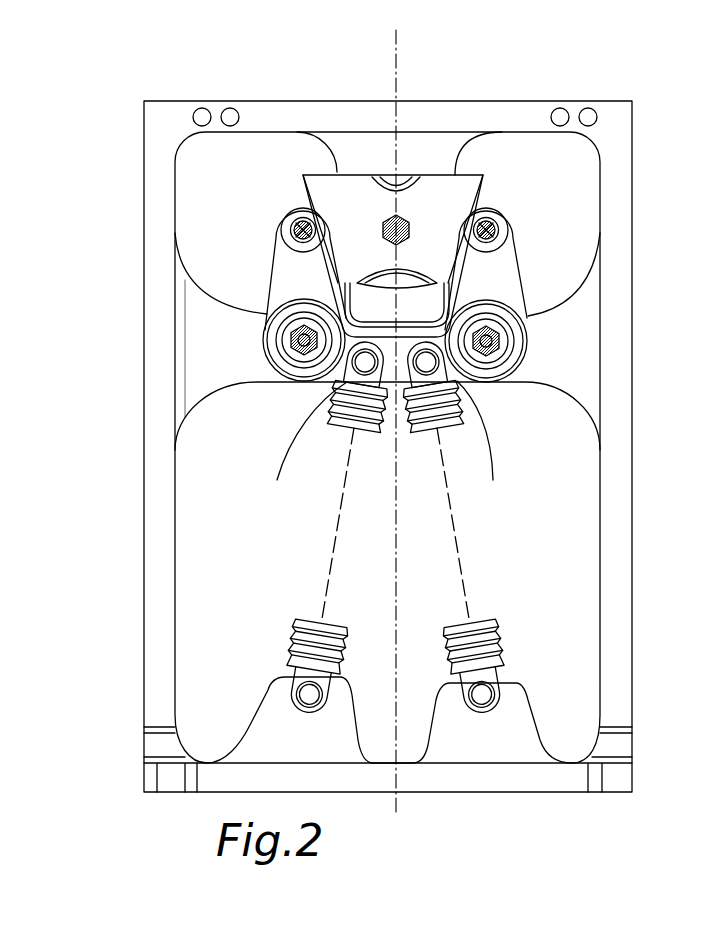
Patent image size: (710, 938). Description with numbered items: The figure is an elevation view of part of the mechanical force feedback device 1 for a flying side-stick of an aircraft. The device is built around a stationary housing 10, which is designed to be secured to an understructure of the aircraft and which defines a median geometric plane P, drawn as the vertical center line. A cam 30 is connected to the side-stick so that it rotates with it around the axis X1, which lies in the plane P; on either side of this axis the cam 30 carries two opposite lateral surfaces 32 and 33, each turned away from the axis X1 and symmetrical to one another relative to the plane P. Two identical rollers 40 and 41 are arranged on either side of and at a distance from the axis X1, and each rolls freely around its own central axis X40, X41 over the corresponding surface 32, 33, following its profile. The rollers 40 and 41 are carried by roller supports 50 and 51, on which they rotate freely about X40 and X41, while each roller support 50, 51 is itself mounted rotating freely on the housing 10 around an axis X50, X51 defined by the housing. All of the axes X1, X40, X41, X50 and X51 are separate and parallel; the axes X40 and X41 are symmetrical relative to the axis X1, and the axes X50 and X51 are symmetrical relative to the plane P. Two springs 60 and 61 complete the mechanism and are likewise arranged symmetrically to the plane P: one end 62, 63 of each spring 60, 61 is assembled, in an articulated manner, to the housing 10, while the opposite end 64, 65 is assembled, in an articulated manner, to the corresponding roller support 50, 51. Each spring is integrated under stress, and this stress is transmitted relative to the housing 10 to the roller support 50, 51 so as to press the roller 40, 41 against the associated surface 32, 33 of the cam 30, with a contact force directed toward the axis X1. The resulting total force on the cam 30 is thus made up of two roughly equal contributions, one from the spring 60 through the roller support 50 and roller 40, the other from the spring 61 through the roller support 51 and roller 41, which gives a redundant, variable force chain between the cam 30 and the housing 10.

The force feedback device 1 is at (420, 96).
The housing 10 is at (436, 800).
The cam 30 is at (410, 234).
The lateral surface 32 is at (303, 197).
The lateral surface 33 is at (484, 188).
The roller 40 is at (216, 266).
The roller 41 is at (560, 261).
The roller support 50 is at (216, 326).
The roller support 51 is at (558, 325).
The spring 60 is at (327, 583).
The spring 61 is at (463, 577).
The end of spring 62 is at (293, 690).
The end of spring 63 is at (500, 684).
The opposite end of spring 64 is at (304, 445).
The opposite end of spring 65 is at (481, 445).
The axis X1 is at (382, 232).
The central axis X40 is at (300, 246).
The central axis X41 is at (490, 244).
The axis X50 is at (298, 313).
The axis X51 is at (498, 310).
The median geometric plane P is at (387, 423).